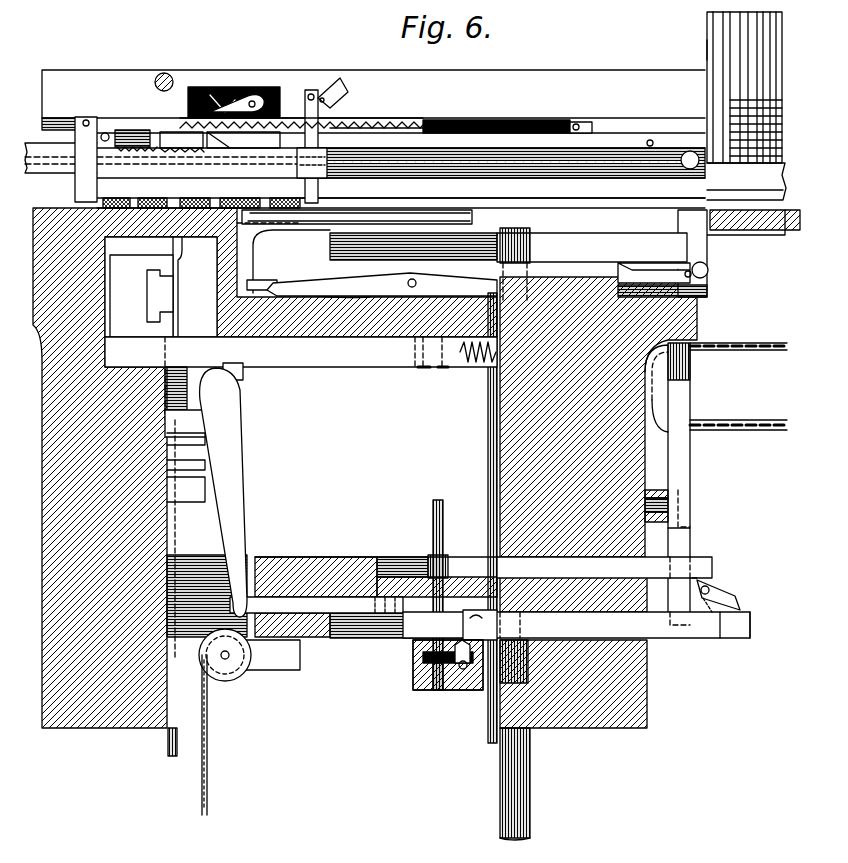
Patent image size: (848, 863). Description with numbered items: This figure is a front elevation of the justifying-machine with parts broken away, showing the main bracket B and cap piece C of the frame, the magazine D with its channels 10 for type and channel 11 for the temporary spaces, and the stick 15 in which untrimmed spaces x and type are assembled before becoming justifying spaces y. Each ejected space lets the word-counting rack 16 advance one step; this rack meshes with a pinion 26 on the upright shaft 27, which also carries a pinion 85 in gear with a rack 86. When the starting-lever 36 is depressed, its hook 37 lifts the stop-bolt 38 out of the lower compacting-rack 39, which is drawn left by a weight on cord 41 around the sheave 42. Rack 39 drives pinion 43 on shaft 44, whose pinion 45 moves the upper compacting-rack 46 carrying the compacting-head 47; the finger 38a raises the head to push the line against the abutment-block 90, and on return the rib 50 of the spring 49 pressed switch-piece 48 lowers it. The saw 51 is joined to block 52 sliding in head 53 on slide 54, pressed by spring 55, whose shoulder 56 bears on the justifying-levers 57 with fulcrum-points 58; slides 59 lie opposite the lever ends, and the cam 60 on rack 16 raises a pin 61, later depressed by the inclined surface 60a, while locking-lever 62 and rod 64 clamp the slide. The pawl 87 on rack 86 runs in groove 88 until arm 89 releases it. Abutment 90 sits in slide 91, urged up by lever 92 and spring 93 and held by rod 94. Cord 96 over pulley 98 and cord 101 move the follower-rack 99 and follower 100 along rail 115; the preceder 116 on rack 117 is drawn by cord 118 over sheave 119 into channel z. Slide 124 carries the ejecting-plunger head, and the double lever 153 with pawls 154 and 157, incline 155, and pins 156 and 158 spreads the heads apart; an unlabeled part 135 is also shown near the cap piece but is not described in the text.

The channels for type 10 is at (772, 20).
The channel for temporary spaces 11 is at (722, 43).
The stick 15 is at (622, 208).
The word-counting rack 16 is at (448, 668).
The pinion 26 is at (413, 665).
The upright shaft 27 is at (433, 528).
The starting-lever 36 is at (660, 525).
The pivoted depending hook 37 is at (687, 507).
The stop-bolt 38 is at (680, 478).
The finger on bolt 38a is at (697, 320).
The lower compacting-rack 39 is at (750, 622).
The cord 41 is at (218, 735).
The sheave 42 is at (240, 678).
The pinion 43 is at (535, 622).
The shaft 44 is at (530, 765).
The pinion 45 is at (535, 246).
The upper compacting-rack 46 is at (508, 247).
The compacting-head 47 is at (690, 245).
The pivoted switch-piece 48 is at (708, 270).
The spring 49 is at (707, 292).
The rib 50 is at (655, 268).
The transversely-reciprocating saw 51 is at (182, 247).
The block 52 is at (165, 290).
The head 53 is at (141, 296).
The slide 54 is at (301, 352).
The spring 55 is at (477, 365).
The shoulder 56 is at (243, 375).
The justifying-levers 57 is at (240, 478).
The fulcrum-points 58 is at (222, 422).
The slides 59 is at (362, 615).
The cam 60 is at (416, 648).
The inclined surface 60a is at (480, 625).
The sliding pins 61 is at (470, 680).
The locking-lever 62 is at (178, 368).
The rod 64 is at (168, 745).
The pinion 85 is at (447, 562).
The rack 86 is at (615, 571).
The pawl 87 is at (736, 598).
The groove 88 is at (720, 638).
The arm 89 is at (700, 615).
The abutment-block 90 is at (438, 215).
The vertically-movable slide 91 is at (258, 240).
The lever 92 is at (326, 283).
The spring 93 is at (275, 282).
The rod 94 is at (488, 424).
The cord 96 is at (524, 172).
The pulley 98 is at (630, 150).
The follower-rack 99 is at (117, 135).
The follower 100 is at (305, 192).
The cord 101 is at (25, 173).
The rail 115 is at (347, 130).
The preceder 116 is at (84, 182).
The sliding rack 117 is at (392, 128).
The cord 118 is at (483, 123).
The sheave 119 is at (575, 122).
The slide 124 is at (165, 238).
The pin 135 is at (160, 74).
The double lever 153 is at (305, 98).
The pawl 154 is at (250, 95).
The incline 155 is at (200, 95).
The fixed pin 156 is at (222, 100).
The pawl 157 is at (185, 137).
The pin 158 is at (147, 132).
The main bracket B is at (490, 455).
The cap piece or bracket C is at (622, 78).
The magazine D is at (795, 62).
The untrimmed temporary spaces x is at (707, 90).
The trimmed or justifying spaces y is at (176, 204).
The channel z is at (338, 208).